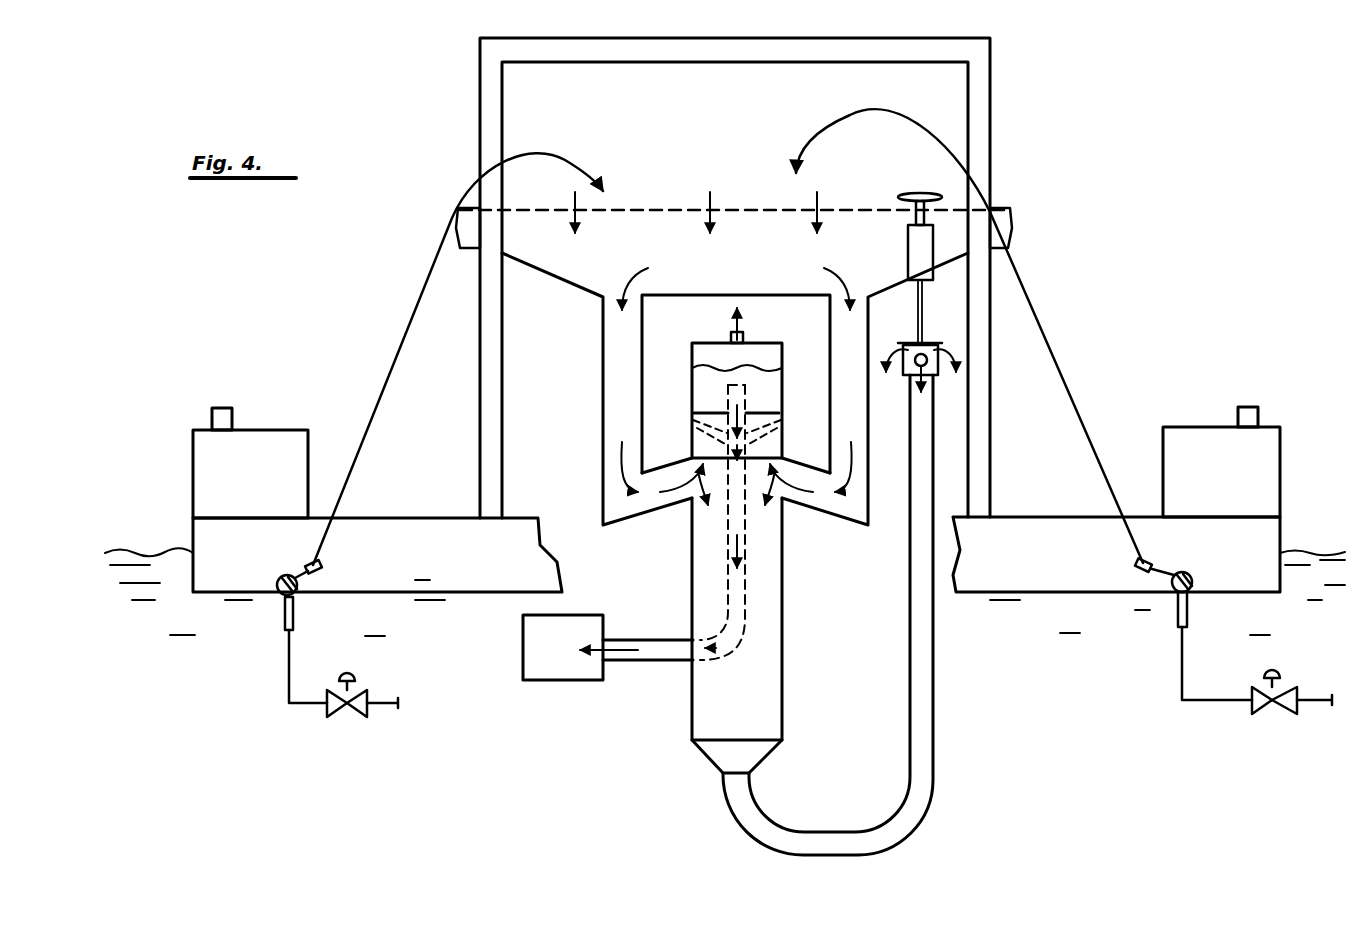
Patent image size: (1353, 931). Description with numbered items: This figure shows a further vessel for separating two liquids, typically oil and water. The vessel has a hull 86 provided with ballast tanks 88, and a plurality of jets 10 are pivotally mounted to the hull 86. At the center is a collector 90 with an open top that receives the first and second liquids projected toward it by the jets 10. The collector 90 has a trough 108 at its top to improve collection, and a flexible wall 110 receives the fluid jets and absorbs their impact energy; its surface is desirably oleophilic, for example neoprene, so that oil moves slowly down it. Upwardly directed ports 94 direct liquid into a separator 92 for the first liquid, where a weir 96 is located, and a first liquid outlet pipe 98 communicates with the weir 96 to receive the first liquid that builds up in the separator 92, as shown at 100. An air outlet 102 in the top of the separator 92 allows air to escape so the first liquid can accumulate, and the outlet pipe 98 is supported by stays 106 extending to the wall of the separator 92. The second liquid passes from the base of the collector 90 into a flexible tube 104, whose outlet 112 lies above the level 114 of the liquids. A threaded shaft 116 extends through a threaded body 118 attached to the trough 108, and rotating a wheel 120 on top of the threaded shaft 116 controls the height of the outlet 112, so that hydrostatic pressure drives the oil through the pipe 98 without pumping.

The jets 10 is at (326, 567).
The hull 86 is at (1072, 520).
The ballast tanks 88 is at (210, 467).
The central collector 90 is at (610, 367).
The separator 92 is at (760, 342).
The upwardly directed ports 94 is at (778, 446).
The weir 96 is at (722, 389).
The first liquid outlet pipe 98 is at (660, 650).
The first liquid buildup 100 is at (768, 375).
The air outlet 102 is at (731, 338).
The flexible tube 104 is at (838, 842).
The stays 106 is at (702, 426).
The trough 108 is at (457, 226).
The flexible wall 110 is at (948, 117).
The outlet 112 is at (925, 384).
The level 114 is at (1295, 552).
The threaded shaft 116 is at (917, 213).
The threaded body 118 is at (908, 255).
The wheel 120 is at (920, 192).